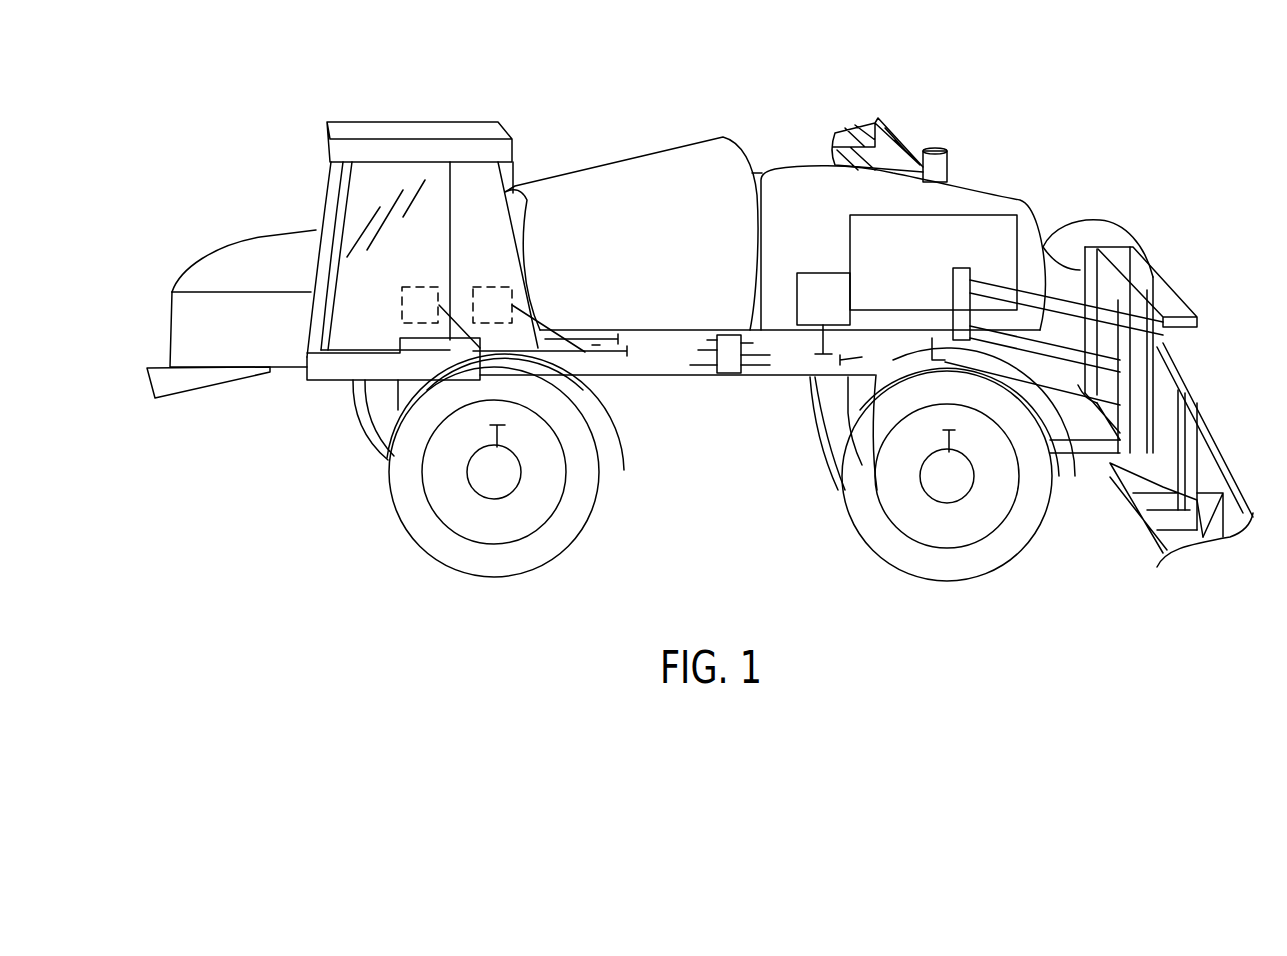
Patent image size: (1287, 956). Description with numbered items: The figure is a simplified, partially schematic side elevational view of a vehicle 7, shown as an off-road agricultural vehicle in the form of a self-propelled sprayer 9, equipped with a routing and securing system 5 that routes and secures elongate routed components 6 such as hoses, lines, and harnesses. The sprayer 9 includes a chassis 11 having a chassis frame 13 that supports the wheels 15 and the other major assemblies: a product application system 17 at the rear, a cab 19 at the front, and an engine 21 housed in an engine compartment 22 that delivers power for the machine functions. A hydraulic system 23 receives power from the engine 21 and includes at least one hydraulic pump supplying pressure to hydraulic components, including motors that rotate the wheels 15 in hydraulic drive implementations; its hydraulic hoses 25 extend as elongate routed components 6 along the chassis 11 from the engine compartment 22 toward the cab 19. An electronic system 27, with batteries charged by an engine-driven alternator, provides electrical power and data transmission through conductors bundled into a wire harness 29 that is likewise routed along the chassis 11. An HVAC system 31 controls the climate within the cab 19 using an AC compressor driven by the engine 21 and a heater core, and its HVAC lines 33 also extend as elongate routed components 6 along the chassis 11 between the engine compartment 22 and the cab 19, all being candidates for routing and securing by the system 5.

The routing and securing system 5 is at (735, 383).
The elongate routed components 6 is at (528, 309).
The vehicle 7 is at (675, 90).
The self-propelled sprayer 9 is at (275, 168).
The chassis 11 is at (791, 383).
The chassis frame 13 is at (671, 378).
The wheels 15 is at (572, 566).
The product application system 17 is at (1150, 210).
The cab 19 is at (385, 103).
The engine 21 is at (960, 238).
The engine compartment 22 is at (1020, 178).
The hydraulic system 23 is at (821, 268).
The hydraulic hoses 25 is at (815, 338).
The electronic system 27 is at (490, 283).
The wire harness 29 is at (592, 345).
The HVAC system 31 is at (398, 303).
The HVAC lines 33 is at (571, 343).